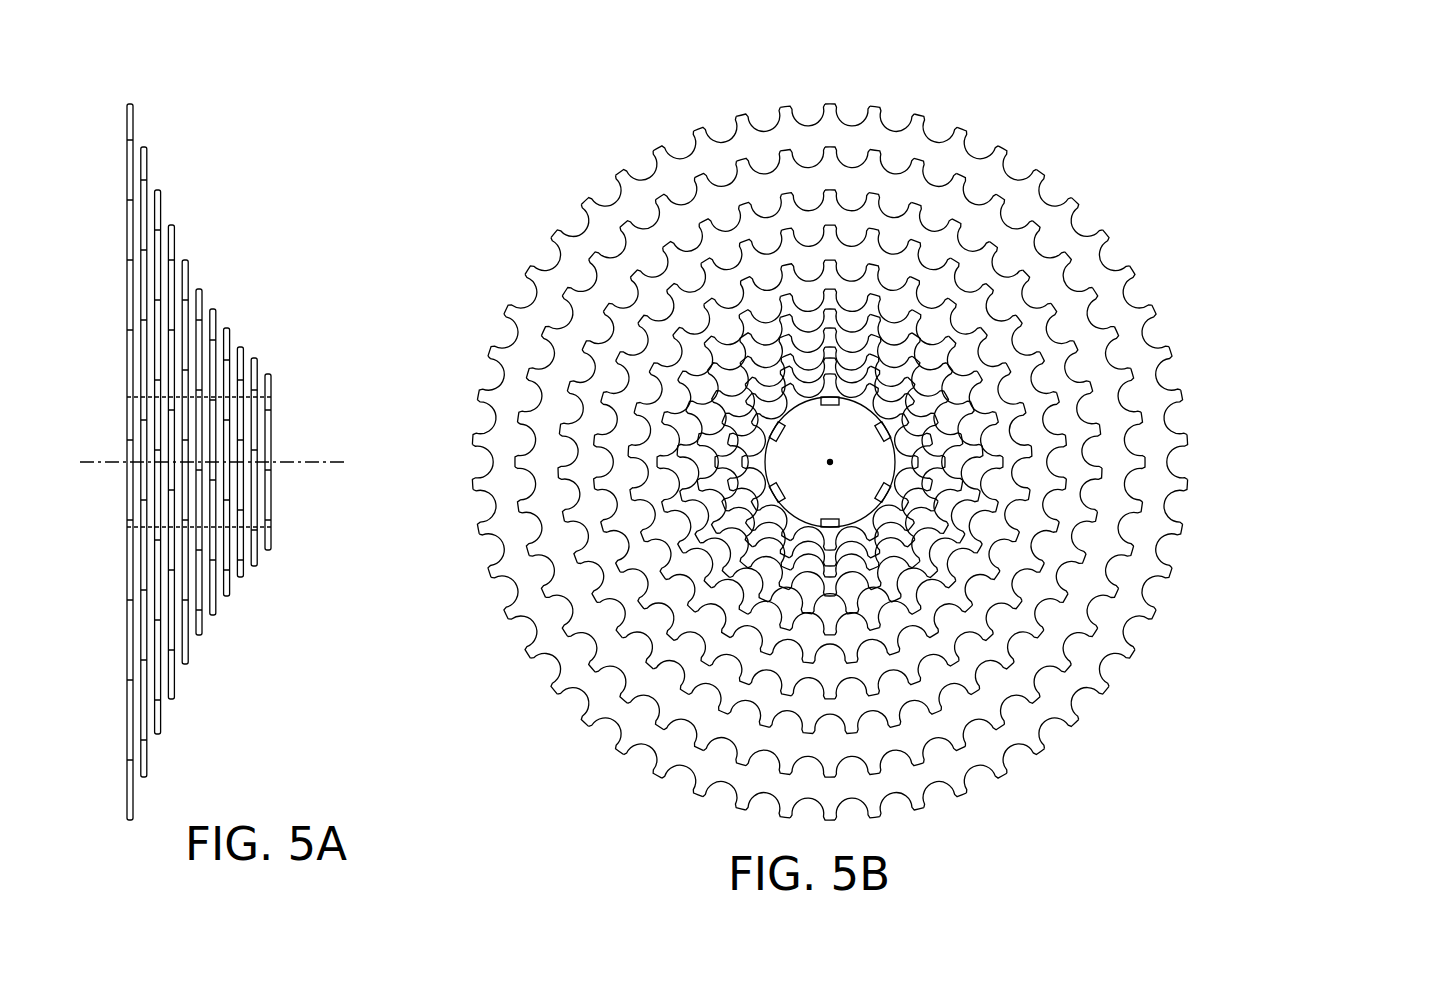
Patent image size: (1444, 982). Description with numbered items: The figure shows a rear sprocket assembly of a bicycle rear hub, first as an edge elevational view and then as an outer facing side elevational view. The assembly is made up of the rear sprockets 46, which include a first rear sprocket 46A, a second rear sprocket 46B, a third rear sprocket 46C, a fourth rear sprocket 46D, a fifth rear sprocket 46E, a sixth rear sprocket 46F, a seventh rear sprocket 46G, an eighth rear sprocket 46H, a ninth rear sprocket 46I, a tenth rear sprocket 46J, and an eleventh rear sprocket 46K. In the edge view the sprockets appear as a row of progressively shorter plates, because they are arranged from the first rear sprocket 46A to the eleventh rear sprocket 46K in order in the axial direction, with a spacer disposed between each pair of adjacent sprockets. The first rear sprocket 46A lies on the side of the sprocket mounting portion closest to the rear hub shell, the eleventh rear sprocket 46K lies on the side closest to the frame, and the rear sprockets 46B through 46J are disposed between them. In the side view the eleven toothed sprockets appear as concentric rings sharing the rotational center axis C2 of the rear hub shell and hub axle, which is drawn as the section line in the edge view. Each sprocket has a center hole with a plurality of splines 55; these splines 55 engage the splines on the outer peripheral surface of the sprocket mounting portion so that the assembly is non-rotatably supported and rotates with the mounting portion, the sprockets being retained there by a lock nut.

In FIG. 5A, the rear sprockets 46 is at (303, 431).
In FIG. 5B, the rear sprockets 46 is at (831, 491).
In FIG. 5A, the first rear sprocket 46A is at (130, 104).
In FIG. 5B, the first rear sprocket 46A is at (953, 141).
In FIG. 5A, the second rear sprocket 46B is at (144, 147).
In FIG. 5B, the second rear sprocket 46B is at (912, 170).
In FIG. 5A, the third rear sprocket 46C is at (158, 190).
In FIG. 5B, the third rear sprocket 46C is at (910, 213).
In FIG. 5A, the fourth rear sprocket 46D is at (172, 225).
In FIG. 5B, the fourth rear sprocket 46D is at (906, 257).
In FIG. 5A, the fifth rear sprocket 46E is at (185, 260).
In FIG. 5B, the fifth rear sprocket 46E is at (942, 348).
In FIG. 5A, the sixth rear sprocket 46F is at (199, 289).
In FIG. 5B, the sixth rear sprocket 46F is at (933, 368).
In FIG. 5A, the seventh rear sprocket 46G is at (213, 309).
In FIG. 5B, the seventh rear sprocket 46G is at (937, 390).
In FIG. 5A, the eighth rear sprocket 46H is at (227, 328).
In FIG. 5B, the eighth rear sprocket 46H is at (923, 420).
In FIG. 5A, the ninth rear sprocket 46I is at (241, 347).
In FIG. 5B, the ninth rear sprocket 46I is at (915, 480).
In FIG. 5A, the tenth rear sprocket 46J is at (254, 358).
In FIG. 5B, the tenth rear sprocket 46J is at (975, 500).
In FIG. 5A, the eleventh rear sprocket 46K is at (310, 456).
In FIG. 5B, the eleventh rear sprocket 46K is at (991, 471).
In FIG. 5A, the splines 55 is at (127, 405).
In FIG. 5B, the splines 55 is at (770, 450).
In FIG. 5A, the rotational center axis C2 is at (220, 463).
In FIG. 5B, the rotational center axis C2 is at (830, 462).